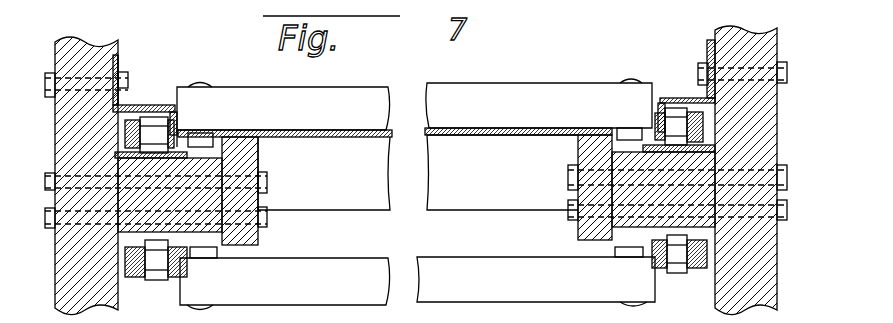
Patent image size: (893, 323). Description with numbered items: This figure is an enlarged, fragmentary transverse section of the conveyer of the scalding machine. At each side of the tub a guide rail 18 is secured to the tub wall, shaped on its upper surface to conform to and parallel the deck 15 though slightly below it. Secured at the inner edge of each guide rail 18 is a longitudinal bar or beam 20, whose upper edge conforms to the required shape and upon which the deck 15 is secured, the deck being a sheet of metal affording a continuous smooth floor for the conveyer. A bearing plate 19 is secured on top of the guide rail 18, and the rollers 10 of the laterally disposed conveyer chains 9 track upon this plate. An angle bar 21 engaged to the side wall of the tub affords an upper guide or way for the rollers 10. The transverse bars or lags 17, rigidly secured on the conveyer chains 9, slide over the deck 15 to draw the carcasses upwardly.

The conveyer chains 9 is at (172, 120).
The rollers 10 is at (151, 128).
The deck 15 is at (433, 128).
The transverse bars or lags 17 is at (543, 97).
The guide rail 18 is at (127, 183).
The bearing plate 19 is at (123, 154).
The longitudinal bar or beam 20 is at (257, 244).
The angle bar 21 is at (121, 107).